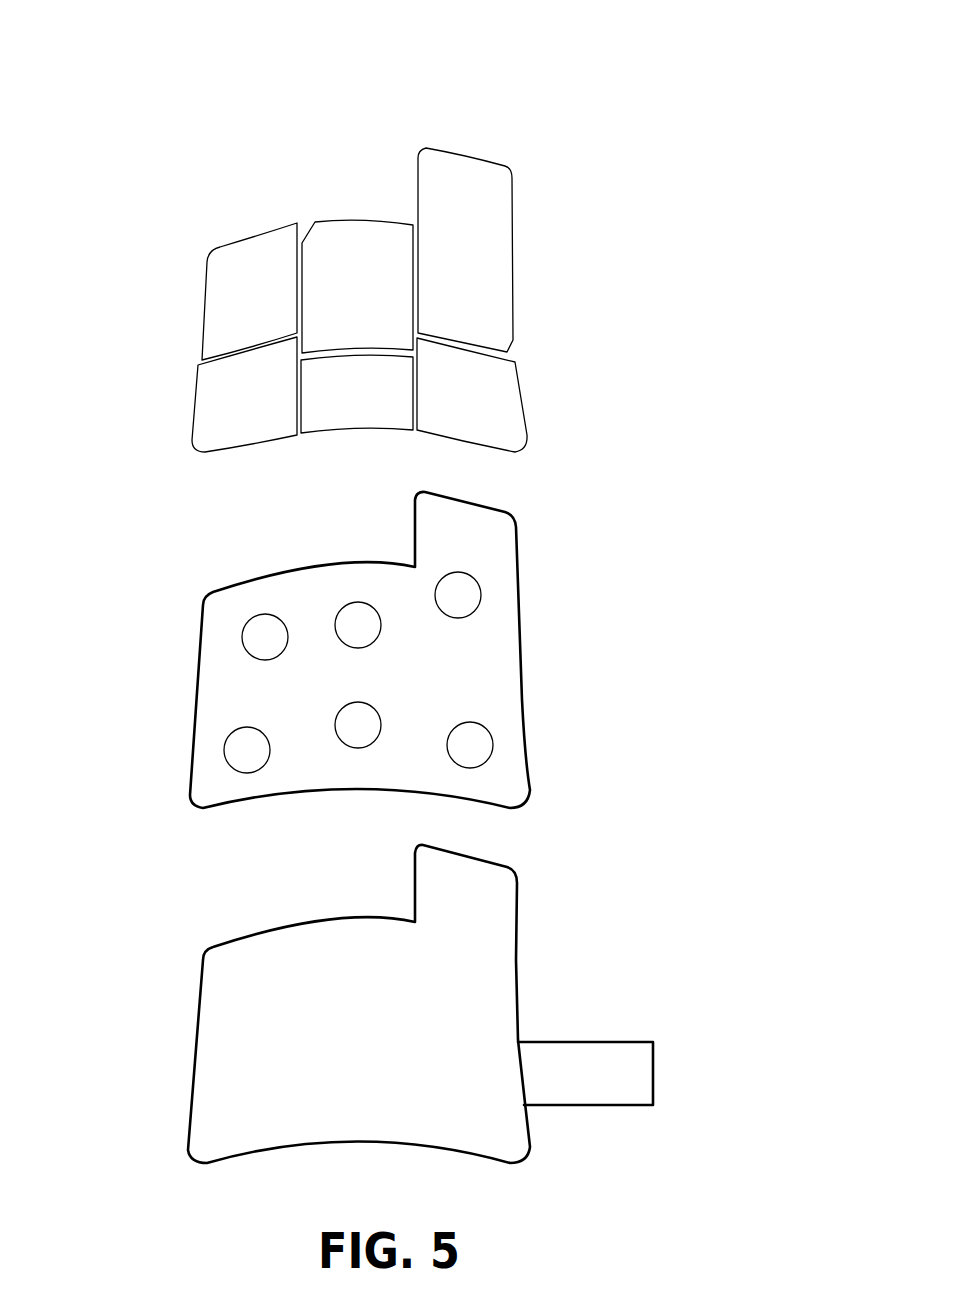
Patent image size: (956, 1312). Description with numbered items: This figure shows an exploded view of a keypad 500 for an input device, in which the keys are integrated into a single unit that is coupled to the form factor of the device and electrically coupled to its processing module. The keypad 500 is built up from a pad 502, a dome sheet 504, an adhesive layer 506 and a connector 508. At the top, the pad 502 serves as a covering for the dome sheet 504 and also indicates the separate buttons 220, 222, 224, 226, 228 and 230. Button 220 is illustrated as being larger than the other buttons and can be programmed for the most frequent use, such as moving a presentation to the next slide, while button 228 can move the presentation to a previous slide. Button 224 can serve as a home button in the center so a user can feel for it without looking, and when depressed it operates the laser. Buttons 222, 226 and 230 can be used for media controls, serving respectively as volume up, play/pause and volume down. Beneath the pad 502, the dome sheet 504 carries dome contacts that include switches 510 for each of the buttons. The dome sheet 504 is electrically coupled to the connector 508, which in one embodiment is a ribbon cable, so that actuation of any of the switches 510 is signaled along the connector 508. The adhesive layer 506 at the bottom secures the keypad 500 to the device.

The keypad 500 is at (240, 115).
The pad 502 is at (535, 217).
The button 220 is at (475, 188).
The button 222 is at (500, 397).
The button 224 is at (353, 245).
The button 226 is at (363, 402).
The button 228 is at (238, 260).
The button 230 is at (232, 425).
The dome sheet 504 is at (518, 647).
The switches 510 is at (358, 602).
The adhesive layer 506 is at (518, 962).
The connector 508 is at (653, 1073).